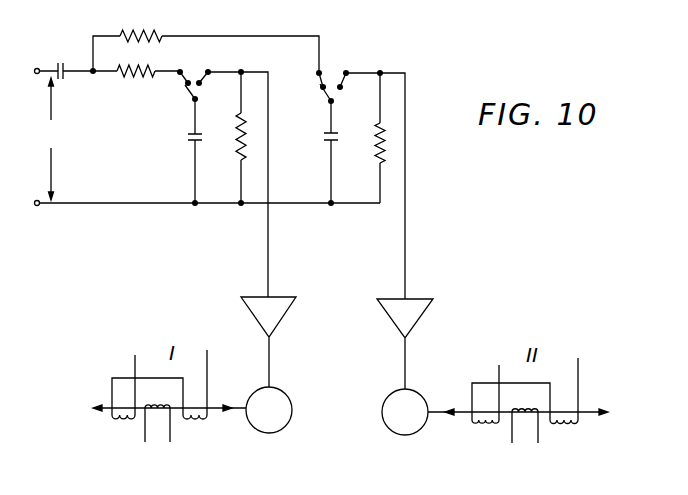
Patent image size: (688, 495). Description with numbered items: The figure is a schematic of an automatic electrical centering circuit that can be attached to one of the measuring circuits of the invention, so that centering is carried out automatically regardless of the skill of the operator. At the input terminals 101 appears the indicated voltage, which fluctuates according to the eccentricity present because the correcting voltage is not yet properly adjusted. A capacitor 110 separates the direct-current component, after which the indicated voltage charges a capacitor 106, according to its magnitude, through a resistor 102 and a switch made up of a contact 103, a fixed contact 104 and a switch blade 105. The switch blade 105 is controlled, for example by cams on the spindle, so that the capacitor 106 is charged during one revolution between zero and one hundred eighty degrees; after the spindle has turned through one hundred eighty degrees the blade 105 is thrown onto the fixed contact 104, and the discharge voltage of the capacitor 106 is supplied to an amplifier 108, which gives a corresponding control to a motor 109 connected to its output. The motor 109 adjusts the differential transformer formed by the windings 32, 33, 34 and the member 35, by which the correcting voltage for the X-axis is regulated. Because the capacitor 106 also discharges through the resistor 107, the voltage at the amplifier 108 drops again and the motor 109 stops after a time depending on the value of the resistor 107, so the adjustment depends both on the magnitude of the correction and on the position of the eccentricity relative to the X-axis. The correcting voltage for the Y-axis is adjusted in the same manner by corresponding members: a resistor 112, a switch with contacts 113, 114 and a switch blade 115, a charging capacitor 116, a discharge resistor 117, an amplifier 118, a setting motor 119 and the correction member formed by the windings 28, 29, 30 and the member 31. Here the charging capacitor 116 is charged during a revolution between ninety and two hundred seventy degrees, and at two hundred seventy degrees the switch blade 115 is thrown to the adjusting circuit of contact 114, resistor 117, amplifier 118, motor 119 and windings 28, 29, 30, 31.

The input terminals 101 is at (37, 139).
The resistor 102 is at (144, 78).
The switch contact 103 is at (180, 69).
The fixed contact 104 is at (210, 70).
The switch blade 105 is at (186, 89).
The capacitor 106 is at (190, 138).
The resistor 107 is at (238, 136).
The amplifier 108 is at (247, 306).
The motor 109 is at (285, 426).
The capacitor 110 is at (58, 62).
The resistor 112 is at (137, 31).
The switch contact 113 is at (321, 69).
The switch contact 114 is at (349, 71).
The switch blade 115 is at (322, 94).
The charging capacitor 116 is at (326, 137).
The discharge resistor 117 is at (377, 136).
The amplifier 118 is at (426, 302).
The setting motor 119 is at (389, 428).
The winding 28 is at (525, 414).
The winding 29 is at (567, 425).
The winding 30 is at (489, 425).
The correction member element 31 is at (531, 410).
The winding 32 is at (158, 410).
The winding 33 is at (200, 420).
The winding 34 is at (121, 420).
The correcting member element 35 is at (153, 407).